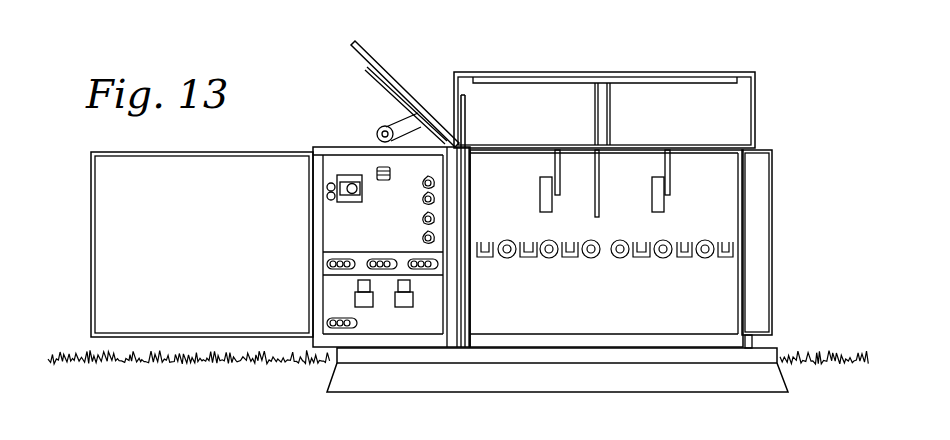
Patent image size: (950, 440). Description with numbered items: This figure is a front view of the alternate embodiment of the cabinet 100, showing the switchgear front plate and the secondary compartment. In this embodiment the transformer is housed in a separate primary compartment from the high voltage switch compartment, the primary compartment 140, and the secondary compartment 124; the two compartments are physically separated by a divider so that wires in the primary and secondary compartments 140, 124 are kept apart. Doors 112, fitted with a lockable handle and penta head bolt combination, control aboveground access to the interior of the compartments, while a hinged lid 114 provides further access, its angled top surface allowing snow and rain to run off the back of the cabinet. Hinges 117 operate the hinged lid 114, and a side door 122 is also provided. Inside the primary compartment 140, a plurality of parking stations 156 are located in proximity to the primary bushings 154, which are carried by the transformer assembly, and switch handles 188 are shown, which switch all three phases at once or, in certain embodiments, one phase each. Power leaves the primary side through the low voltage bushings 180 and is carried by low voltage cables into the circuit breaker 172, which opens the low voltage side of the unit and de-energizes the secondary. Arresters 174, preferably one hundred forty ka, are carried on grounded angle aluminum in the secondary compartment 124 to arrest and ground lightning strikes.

The equipment enclosure system 100 is at (772, 118).
The door 112 is at (158, 232).
The hinged lid 114 is at (402, 93).
The hinge 117 is at (380, 128).
The side door 122 is at (441, 310).
The secondary compartment 124 is at (387, 316).
The primary compartment 140 is at (592, 315).
The primary bushings 154 is at (700, 258).
The parking stations 156 is at (561, 258).
The circuit breaker 172 is at (327, 191).
The arresters 174 is at (396, 302).
The low voltage bushings 180 is at (420, 195).
The switch handles 188 is at (555, 192).